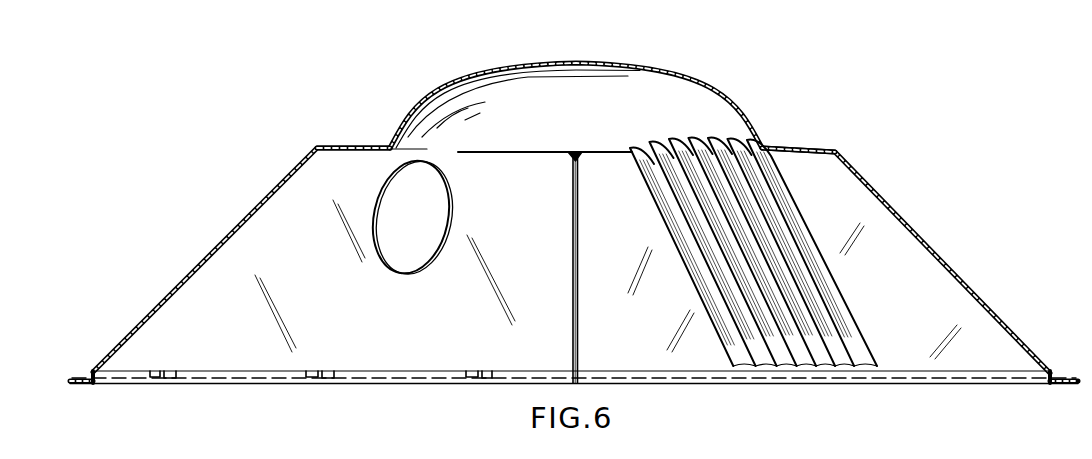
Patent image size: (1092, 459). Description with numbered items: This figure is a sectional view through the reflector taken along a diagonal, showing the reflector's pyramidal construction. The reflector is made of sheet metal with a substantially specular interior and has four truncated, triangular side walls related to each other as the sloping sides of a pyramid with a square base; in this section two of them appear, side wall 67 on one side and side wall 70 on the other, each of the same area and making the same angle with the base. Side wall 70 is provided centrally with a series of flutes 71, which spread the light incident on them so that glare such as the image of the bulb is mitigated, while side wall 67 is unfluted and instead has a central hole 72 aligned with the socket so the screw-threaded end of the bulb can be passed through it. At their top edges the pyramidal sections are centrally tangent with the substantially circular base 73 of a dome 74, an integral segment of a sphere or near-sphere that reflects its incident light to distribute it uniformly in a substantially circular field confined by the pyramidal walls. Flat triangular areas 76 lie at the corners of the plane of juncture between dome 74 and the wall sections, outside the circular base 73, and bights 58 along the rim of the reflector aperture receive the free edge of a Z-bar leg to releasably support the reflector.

The bights 58 is at (155, 372).
The side wall 67 is at (347, 334).
The side wall 70 is at (912, 317).
The flutes 71 is at (680, 228).
The hole 72 is at (432, 220).
The circular base 73 is at (505, 151).
The dome 74 is at (579, 63).
The triangular flats 76 is at (352, 147).